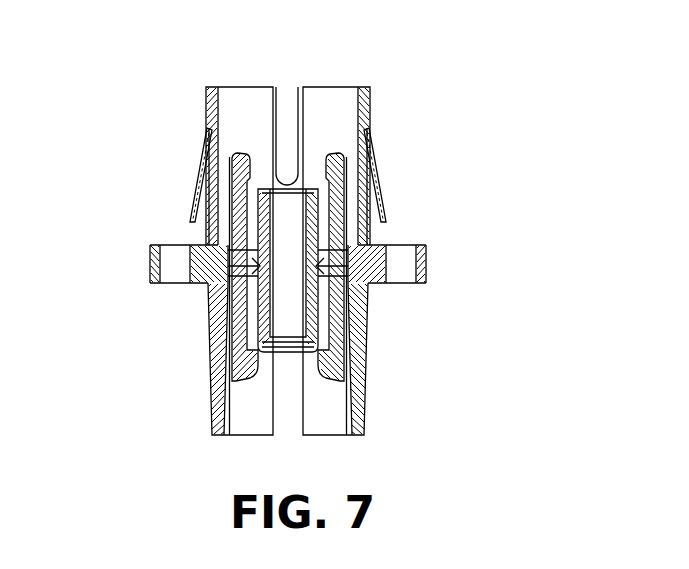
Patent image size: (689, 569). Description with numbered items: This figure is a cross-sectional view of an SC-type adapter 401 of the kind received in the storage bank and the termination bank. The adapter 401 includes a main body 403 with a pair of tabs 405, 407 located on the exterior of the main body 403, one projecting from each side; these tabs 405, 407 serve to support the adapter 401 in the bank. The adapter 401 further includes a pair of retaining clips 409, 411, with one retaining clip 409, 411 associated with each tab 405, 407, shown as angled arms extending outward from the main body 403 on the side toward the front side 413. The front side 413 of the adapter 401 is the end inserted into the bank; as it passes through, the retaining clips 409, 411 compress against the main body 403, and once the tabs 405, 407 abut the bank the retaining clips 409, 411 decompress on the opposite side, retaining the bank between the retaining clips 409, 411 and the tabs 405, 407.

The adapter 401 is at (512, 109).
The main body 403 is at (372, 318).
The tab 405 is at (150, 262).
The tab 407 is at (427, 258).
The retaining clip 409 is at (192, 186).
The retaining clip 411 is at (382, 180).
The front side 413 is at (368, 93).